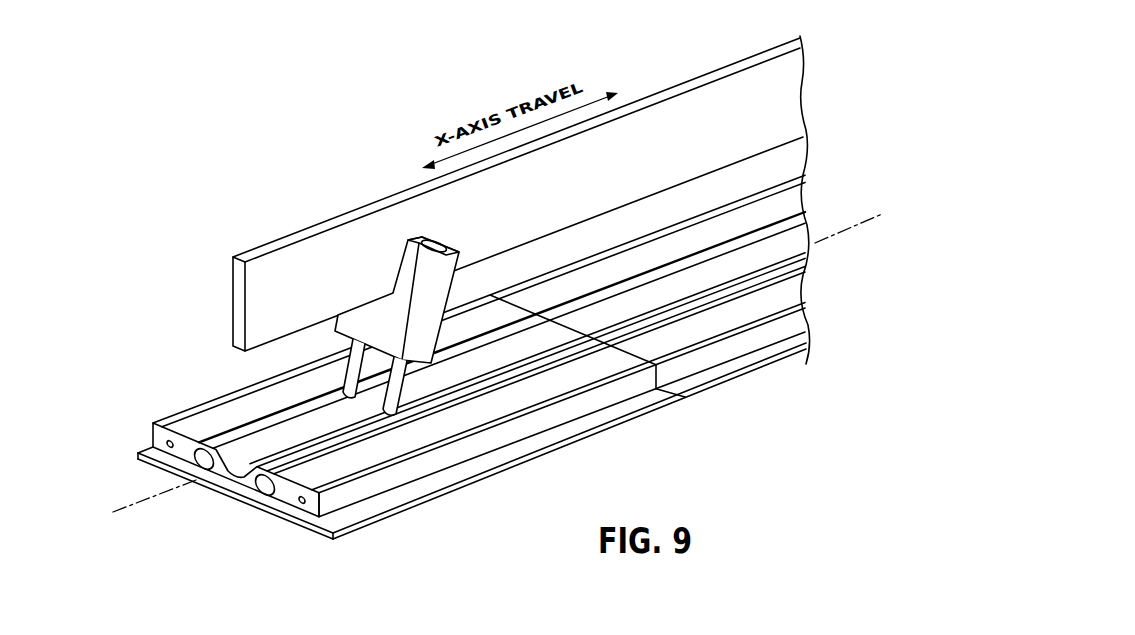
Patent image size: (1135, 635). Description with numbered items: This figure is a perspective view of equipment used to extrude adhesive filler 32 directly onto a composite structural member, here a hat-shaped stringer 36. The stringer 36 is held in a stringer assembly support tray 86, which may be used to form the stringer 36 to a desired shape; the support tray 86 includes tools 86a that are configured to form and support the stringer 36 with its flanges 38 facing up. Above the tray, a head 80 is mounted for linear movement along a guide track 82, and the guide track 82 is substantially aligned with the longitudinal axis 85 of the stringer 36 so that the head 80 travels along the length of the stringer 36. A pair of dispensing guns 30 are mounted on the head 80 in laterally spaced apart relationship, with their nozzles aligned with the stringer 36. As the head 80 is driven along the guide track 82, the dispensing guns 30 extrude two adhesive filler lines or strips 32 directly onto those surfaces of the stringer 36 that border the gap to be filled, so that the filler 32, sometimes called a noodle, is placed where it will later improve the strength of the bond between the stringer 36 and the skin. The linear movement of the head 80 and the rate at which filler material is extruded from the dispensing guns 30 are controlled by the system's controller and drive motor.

The dispensing guns 30 is at (353, 375).
The adhesive filler 32 is at (283, 444).
The stringer 36 is at (682, 283).
The flanges 38 is at (200, 420).
The head 80 is at (427, 330).
The guide track 82 is at (293, 268).
The longitudinal axis 85 is at (158, 495).
The stringer assembly support tray 86 is at (617, 417).
The tools 86a is at (182, 440).